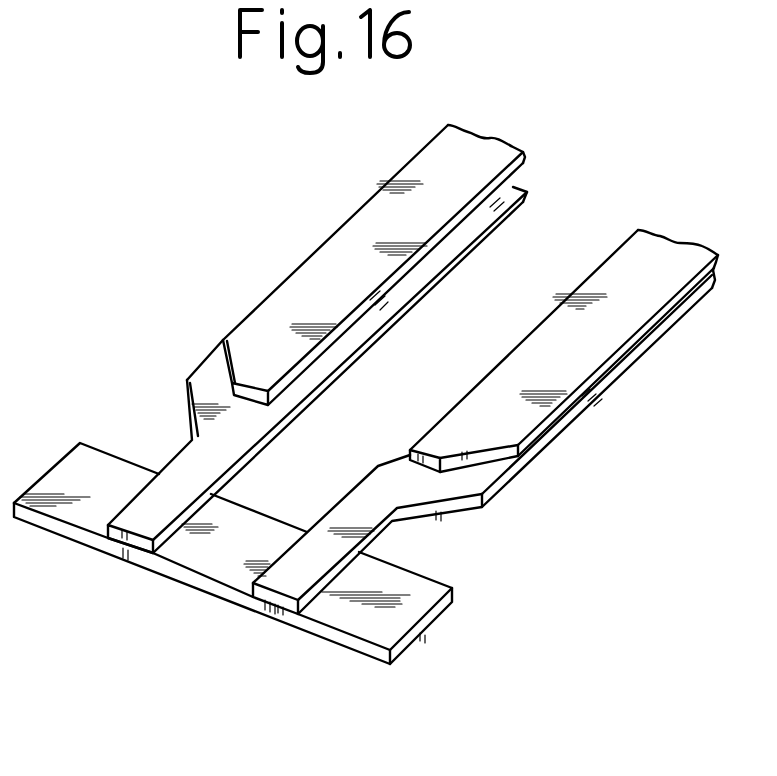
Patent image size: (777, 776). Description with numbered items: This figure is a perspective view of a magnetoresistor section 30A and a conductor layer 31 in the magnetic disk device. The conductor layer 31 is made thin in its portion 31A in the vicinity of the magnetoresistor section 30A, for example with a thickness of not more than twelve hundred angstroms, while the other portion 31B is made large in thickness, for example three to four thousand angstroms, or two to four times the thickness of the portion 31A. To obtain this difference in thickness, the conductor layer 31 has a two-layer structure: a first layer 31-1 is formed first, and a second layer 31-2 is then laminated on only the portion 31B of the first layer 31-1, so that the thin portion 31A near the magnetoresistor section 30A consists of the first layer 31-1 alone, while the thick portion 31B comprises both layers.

The magnetoresistor section 30A is at (213, 565).
The conductor layer 31 is at (168, 203).
The first layer 31-1 is at (411, 403).
The second layer 31-2 is at (303, 270).
The portion in the vicinity of the magnetoresistor section 31A is at (330, 521).
The other portion 31B is at (555, 300).